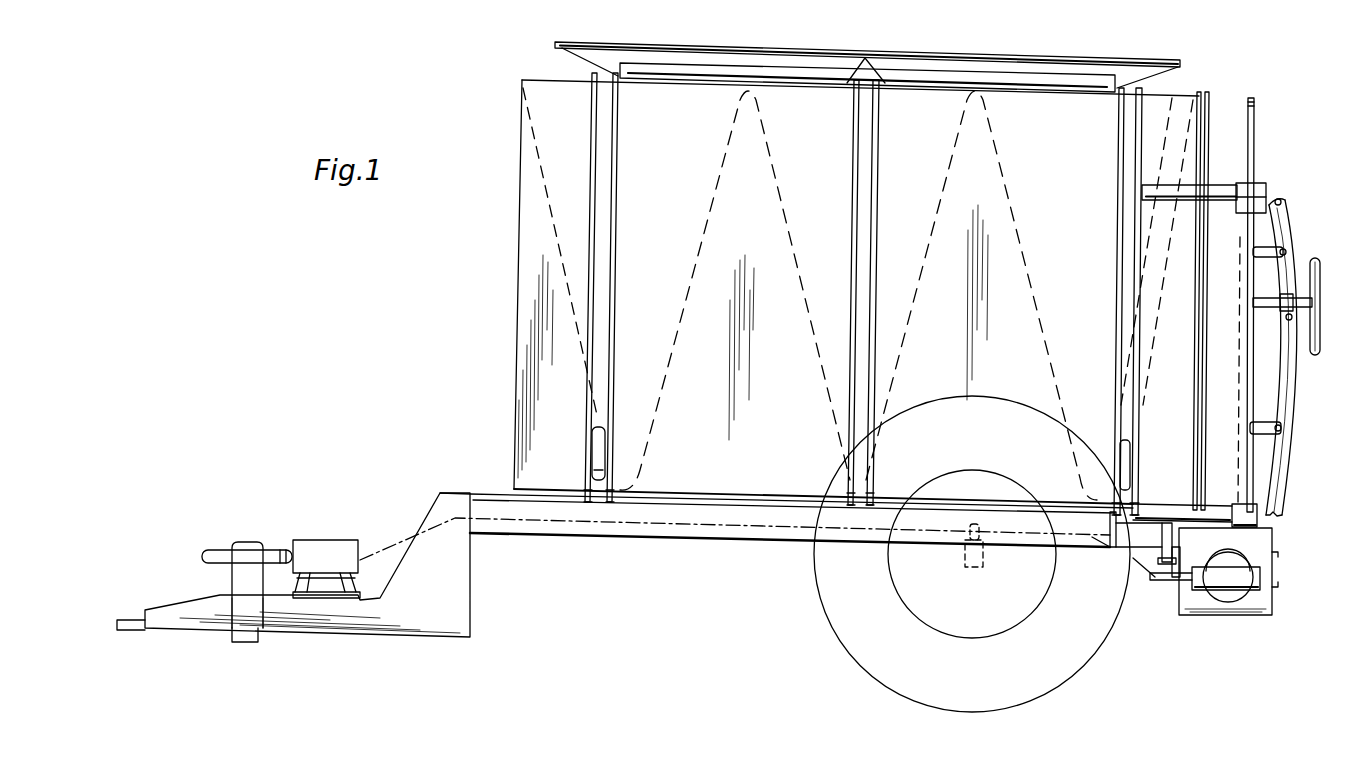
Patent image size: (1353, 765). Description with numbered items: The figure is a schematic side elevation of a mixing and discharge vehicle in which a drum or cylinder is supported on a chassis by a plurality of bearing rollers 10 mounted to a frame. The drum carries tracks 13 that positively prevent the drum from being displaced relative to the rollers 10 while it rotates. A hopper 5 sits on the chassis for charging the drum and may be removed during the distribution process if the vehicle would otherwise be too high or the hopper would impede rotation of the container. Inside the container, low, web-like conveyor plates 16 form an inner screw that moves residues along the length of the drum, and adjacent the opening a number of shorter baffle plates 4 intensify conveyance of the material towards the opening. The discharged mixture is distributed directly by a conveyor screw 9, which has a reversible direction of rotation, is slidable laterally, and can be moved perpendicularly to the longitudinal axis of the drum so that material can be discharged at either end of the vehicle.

The baffle plates 4 is at (1162, 125).
The hopper 5 is at (662, 66).
The conveyor screw 9 is at (1223, 596).
The bearing rollers 10 is at (598, 481).
The tracks 13 is at (1128, 202).
The conveyor plates 16 is at (700, 262).